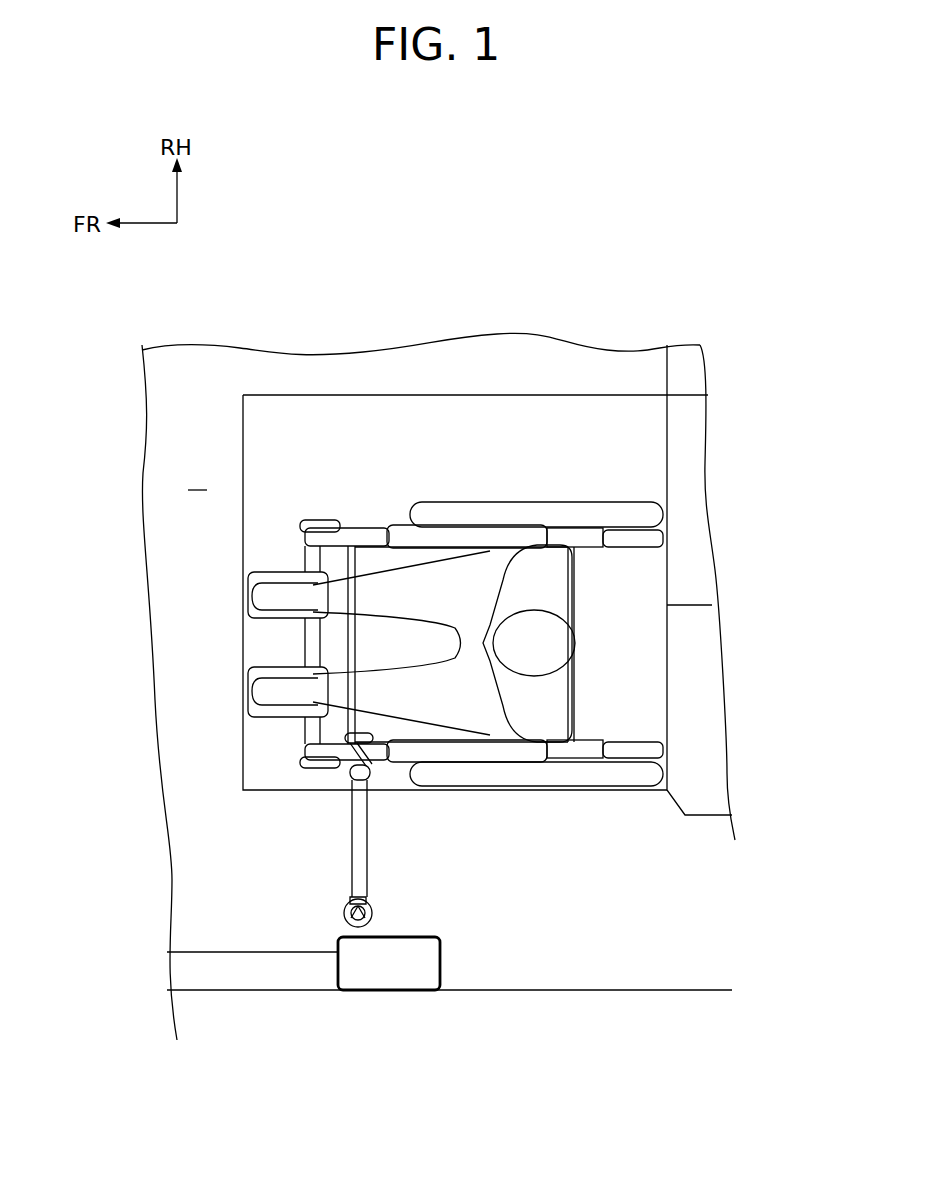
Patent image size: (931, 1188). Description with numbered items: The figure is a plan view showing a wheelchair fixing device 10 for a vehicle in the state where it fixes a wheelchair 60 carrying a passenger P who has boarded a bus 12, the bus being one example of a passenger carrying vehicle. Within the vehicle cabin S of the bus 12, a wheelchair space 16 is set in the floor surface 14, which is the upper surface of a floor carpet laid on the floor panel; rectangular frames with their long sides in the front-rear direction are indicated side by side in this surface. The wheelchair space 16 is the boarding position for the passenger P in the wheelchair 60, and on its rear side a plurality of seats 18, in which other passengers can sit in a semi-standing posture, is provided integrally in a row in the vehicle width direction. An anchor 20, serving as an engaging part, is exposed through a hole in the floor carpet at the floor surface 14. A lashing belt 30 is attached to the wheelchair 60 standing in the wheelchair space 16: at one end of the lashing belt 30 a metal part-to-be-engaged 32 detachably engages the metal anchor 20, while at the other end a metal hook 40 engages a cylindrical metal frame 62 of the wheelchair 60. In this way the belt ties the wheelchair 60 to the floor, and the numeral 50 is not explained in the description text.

The wheelchair fixing device 10 is at (366, 832).
The bus 12 is at (434, 611).
The floor surface 14 is at (190, 858).
The wheelchair space 16 is at (242, 372).
The seats 18 is at (690, 372).
The anchor 20 is at (347, 918).
The lashing belt 30 is at (358, 848).
The part-to-be-engaged 32 is at (372, 918).
The hook 40 is at (347, 768).
The wheelchair 50 is at (520, 644).
The wheelchair 60 is at (583, 603).
The frame 62 is at (372, 775).
The passenger P is at (557, 640).
The vehicle cabin S is at (197, 476).